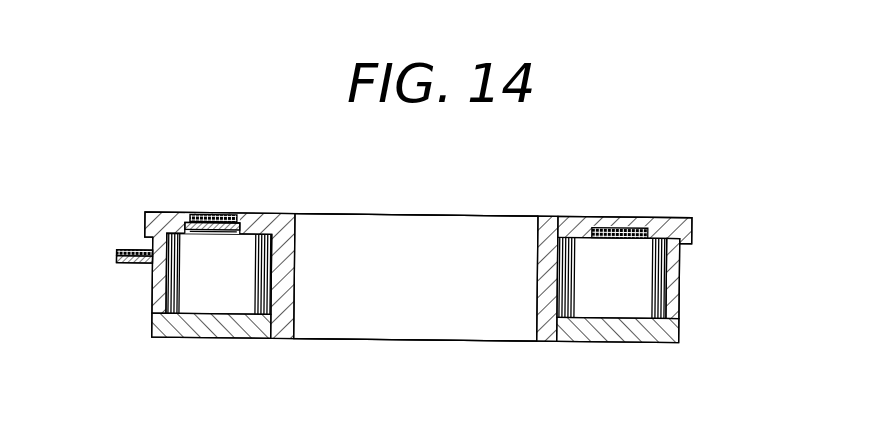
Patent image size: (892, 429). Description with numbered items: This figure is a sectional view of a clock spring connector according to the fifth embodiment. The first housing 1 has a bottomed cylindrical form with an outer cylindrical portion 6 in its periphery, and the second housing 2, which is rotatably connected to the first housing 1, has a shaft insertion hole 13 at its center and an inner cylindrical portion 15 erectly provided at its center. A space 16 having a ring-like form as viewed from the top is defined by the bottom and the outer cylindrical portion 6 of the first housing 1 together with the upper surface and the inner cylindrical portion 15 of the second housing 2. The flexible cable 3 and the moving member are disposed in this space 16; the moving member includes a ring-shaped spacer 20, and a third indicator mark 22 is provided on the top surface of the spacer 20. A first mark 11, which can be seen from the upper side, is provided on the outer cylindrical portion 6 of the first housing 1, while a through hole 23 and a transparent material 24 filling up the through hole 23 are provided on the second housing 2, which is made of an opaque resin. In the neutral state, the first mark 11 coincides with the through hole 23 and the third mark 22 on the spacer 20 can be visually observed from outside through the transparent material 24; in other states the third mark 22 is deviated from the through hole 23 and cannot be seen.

The first housing 1 is at (674, 350).
The second housing 2 is at (156, 219).
The flexible cable 3 is at (253, 297).
The outer cylindrical portion 6 is at (668, 285).
The first mark 11 is at (123, 250).
The shaft insertion hole 13 is at (353, 330).
The inner cylindrical portion 15 is at (545, 283).
The space 16 is at (203, 297).
The spacer 20 is at (210, 237).
The third indicator mark 22 is at (241, 219).
The through hole 23 is at (188, 220).
The transparent material 24 is at (216, 220).